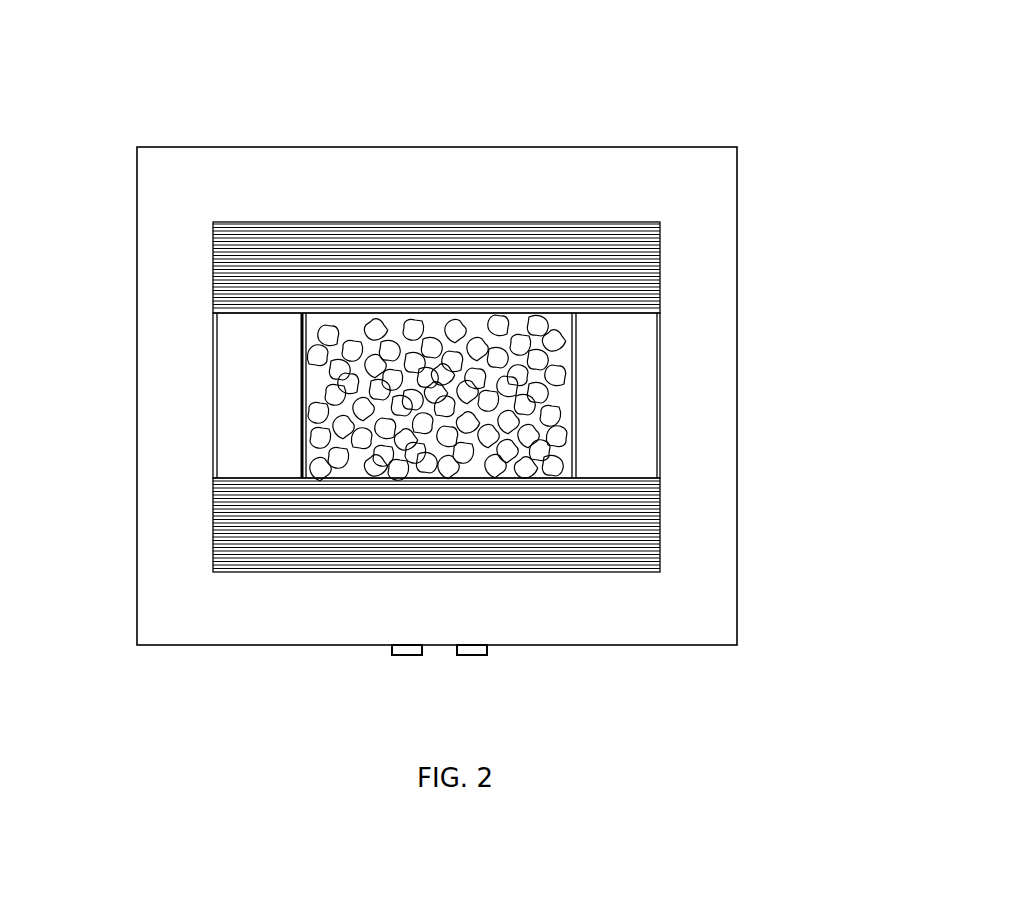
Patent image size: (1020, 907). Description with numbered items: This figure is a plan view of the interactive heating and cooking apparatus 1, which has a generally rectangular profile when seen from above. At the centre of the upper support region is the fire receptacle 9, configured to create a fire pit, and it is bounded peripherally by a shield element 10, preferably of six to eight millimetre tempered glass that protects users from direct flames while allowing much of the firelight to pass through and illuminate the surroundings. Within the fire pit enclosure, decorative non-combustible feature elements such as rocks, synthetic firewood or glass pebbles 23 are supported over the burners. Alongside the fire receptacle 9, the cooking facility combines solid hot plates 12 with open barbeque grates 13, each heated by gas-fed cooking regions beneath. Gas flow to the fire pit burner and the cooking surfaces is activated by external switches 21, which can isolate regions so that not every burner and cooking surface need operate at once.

The interactive heating and cooking apparatus 1 is at (660, 89).
The fire receptacle 9 is at (292, 440).
The shield element 10 is at (578, 333).
The solid hot plates 12 is at (624, 423).
The open barbeque grates 13 is at (616, 250).
The external switches 21 is at (413, 657).
The glass pebbles 23 is at (394, 345).